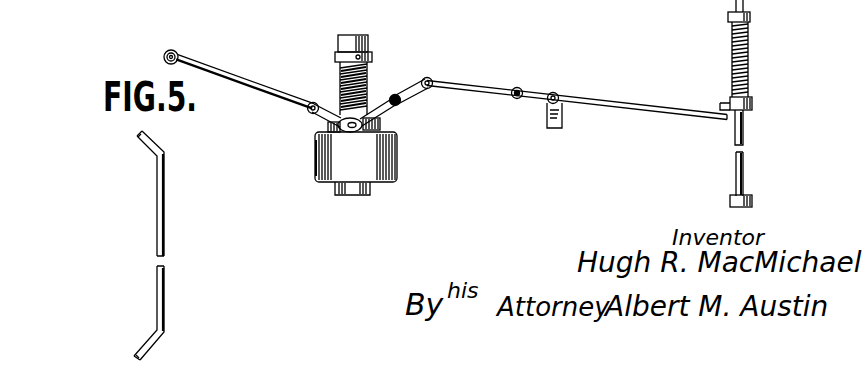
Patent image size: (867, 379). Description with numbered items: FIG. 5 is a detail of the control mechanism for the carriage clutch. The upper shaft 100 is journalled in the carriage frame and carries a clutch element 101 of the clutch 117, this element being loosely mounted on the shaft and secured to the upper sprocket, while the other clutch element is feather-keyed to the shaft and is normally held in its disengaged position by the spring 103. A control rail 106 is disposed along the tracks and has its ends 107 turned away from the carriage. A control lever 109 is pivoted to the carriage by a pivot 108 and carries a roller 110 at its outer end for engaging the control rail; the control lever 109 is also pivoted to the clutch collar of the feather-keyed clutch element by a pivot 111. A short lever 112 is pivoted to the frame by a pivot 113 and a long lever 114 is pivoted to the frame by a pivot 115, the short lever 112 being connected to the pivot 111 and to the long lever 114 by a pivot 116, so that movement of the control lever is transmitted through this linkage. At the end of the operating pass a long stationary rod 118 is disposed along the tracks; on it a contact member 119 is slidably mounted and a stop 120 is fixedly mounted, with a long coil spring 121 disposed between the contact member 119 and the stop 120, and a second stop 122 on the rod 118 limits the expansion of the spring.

The upper shaft 100 is at (371, 63).
The clutch element 101 is at (356, 163).
The spring 103 is at (338, 56).
The control rail 106 is at (166, 210).
The ends of control rail 107 is at (140, 139).
The pivot 108 is at (303, 112).
The control lever 109 is at (228, 78).
The roller 110 is at (170, 50).
The pivot 111 is at (381, 124).
The short lever 112 is at (415, 91).
The pivot 113 is at (400, 113).
The long lever 114 is at (643, 110).
The pivot 115 is at (522, 88).
The pivot 116 is at (432, 80).
The clutch 117 is at (314, 161).
The stationary rod 118 is at (746, 134).
The contact member 119 is at (753, 103).
The stop 120 is at (751, 19).
The coil spring 121 is at (749, 60).
The second stop 122 is at (753, 201).